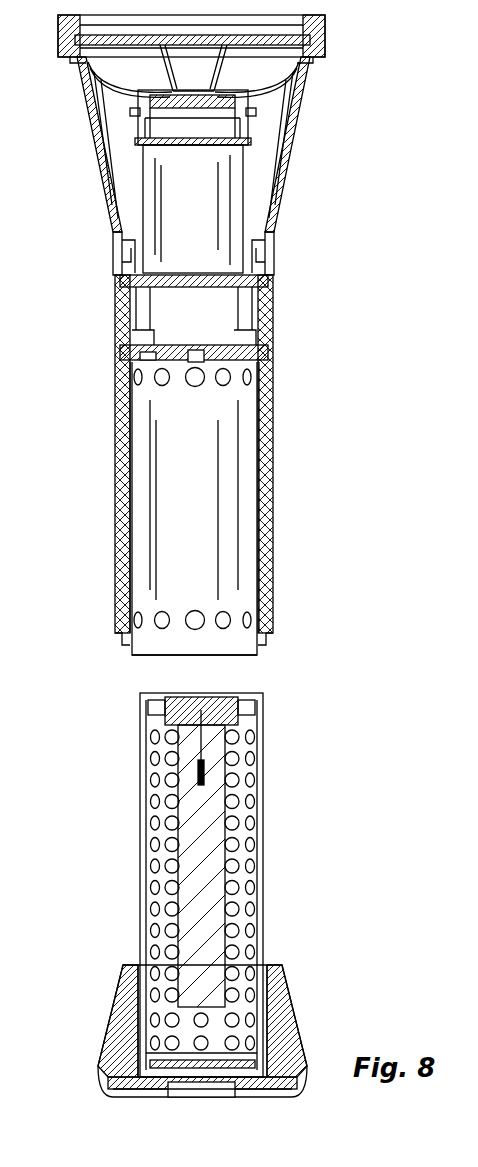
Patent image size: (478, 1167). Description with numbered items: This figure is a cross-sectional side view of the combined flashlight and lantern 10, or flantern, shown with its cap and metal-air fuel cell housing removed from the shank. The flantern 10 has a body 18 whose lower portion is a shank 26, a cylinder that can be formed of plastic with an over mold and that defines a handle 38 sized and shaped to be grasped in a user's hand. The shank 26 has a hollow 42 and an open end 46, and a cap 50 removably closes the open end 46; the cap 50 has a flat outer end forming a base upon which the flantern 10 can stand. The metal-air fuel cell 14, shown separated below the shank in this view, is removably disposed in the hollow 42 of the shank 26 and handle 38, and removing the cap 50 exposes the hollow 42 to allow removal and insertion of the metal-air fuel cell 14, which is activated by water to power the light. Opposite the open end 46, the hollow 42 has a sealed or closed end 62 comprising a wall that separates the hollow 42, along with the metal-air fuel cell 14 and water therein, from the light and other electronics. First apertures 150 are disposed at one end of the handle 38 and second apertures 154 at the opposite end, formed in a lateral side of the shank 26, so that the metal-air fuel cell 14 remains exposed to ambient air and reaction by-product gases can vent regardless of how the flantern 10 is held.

The combined flashlight and lantern 10 is at (84, 964).
The metal-air fuel cell 14 is at (125, 765).
The body 18 is at (116, 462).
The shank 26 is at (116, 580).
The handle 38 is at (265, 546).
The hollow 42 is at (237, 503).
The open end 46 is at (220, 652).
The cap 50 is at (295, 1016).
The sealed or closed end 62 is at (229, 391).
The first apertures 150 is at (190, 634).
The second apertures 154 is at (186, 385).